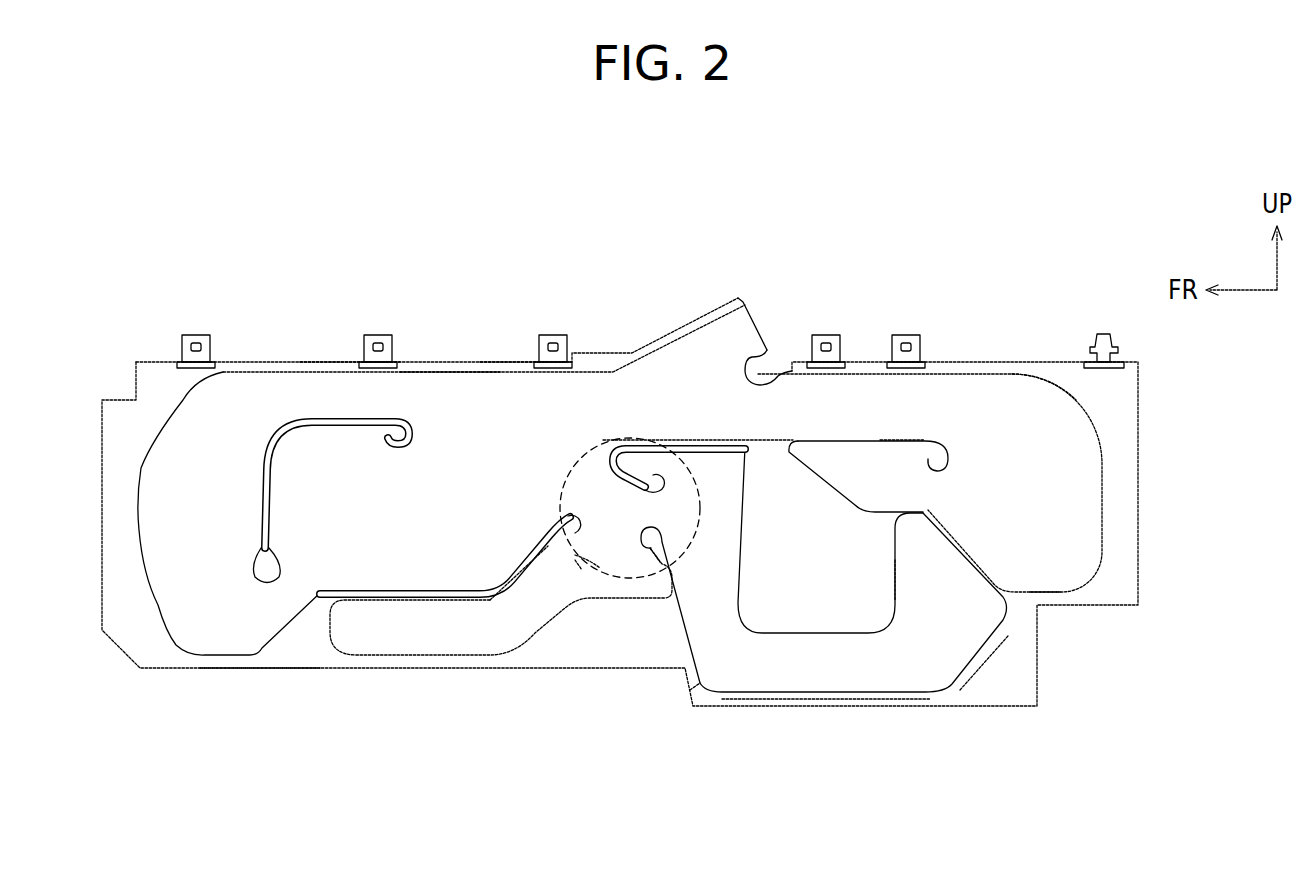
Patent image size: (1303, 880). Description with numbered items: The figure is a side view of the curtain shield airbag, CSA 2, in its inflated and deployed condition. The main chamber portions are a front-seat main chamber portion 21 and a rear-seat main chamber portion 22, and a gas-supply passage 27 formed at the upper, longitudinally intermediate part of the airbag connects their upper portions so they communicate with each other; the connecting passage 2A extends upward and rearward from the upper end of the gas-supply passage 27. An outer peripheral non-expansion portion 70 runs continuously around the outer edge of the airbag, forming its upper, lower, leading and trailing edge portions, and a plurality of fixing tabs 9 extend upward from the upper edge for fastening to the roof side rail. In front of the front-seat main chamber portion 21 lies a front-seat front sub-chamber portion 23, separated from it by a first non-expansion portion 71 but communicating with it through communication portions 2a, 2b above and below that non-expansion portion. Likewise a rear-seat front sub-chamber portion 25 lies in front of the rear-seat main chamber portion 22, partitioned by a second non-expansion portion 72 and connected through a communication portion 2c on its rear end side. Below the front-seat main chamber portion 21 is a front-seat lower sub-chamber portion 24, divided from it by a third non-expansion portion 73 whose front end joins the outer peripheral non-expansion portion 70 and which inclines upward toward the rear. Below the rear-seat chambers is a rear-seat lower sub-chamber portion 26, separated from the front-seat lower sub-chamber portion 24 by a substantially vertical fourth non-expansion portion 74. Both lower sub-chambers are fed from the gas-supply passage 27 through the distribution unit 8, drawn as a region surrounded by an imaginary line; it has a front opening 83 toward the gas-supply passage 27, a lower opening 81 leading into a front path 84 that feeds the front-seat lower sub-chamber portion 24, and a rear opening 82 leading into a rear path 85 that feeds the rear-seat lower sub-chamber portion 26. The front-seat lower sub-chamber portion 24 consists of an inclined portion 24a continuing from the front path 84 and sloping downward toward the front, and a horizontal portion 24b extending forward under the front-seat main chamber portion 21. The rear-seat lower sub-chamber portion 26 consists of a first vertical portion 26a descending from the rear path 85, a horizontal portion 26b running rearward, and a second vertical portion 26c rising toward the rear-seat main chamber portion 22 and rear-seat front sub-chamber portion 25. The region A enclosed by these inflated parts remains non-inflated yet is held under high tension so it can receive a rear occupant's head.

The CSA (curtain shield airbag) 2 is at (229, 194).
The connecting passage 2A is at (718, 335).
The communication portion 2a is at (414, 392).
The communication portion 2b is at (263, 605).
The communication portion 2c is at (940, 500).
The distribution unit 8 is at (597, 471).
The fixing tab 9 is at (196, 333).
The front-seat main chamber portion 21 is at (440, 490).
The rear-seat main chamber portion 22 is at (1037, 467).
The front-seat front sub-chamber portion 23 is at (207, 487).
The front-seat lower sub-chamber portion 24 is at (420, 628).
The inclined portion 24a is at (537, 600).
The horizontal portion 24b is at (443, 627).
The rear-seat front sub-chamber portion 25 is at (880, 437).
The rear-seat lower sub-chamber portion 26 is at (872, 660).
The first vertical portion 26a is at (707, 613).
The horizontal portion 26b is at (798, 673).
The second vertical portion 26c is at (967, 617).
The gas-supply passage 27 is at (622, 395).
The outer peripheral non-expansion portion 70 is at (510, 365).
The first non-expansion portion 71 is at (272, 466).
The second non-expansion portion 72 is at (851, 435).
The third non-expansion portion 73 is at (465, 600).
The fourth non-expansion portion 74 is at (673, 595).
The lower opening 81 is at (613, 548).
The rear opening 82 is at (655, 513).
The front opening 83 is at (592, 497).
The front path 84 is at (582, 568).
The rear path 85 is at (677, 540).
The region A (non-inflated portion) A is at (843, 568).